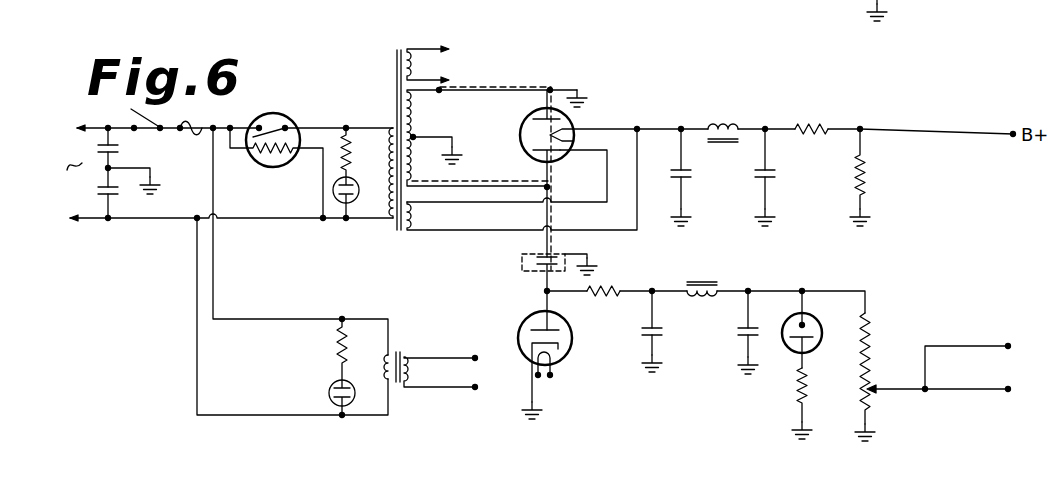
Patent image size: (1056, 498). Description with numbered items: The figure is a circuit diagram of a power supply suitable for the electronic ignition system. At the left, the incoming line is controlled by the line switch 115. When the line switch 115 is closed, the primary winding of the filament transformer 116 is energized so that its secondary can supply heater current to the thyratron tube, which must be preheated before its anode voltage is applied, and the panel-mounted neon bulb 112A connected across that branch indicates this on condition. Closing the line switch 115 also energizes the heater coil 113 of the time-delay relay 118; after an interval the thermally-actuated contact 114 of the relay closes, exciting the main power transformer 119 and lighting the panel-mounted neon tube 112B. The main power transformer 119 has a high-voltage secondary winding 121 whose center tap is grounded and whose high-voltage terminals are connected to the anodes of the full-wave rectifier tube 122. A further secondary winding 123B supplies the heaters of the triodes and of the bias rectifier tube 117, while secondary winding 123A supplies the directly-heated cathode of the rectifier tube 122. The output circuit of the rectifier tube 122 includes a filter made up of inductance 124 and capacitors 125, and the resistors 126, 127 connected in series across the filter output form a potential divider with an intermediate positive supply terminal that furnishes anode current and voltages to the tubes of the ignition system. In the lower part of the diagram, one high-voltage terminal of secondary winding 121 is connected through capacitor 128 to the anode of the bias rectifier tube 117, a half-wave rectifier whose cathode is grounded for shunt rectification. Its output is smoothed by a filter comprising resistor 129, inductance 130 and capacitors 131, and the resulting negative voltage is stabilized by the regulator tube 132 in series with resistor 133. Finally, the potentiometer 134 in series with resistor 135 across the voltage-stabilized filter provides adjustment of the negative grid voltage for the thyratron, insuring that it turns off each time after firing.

The panel-mounted neon bulb 112A is at (328, 385).
The panel-mounted neon tube 112B is at (353, 202).
The heater coil 113 is at (275, 160).
The thermally-actuated contact 114 is at (267, 123).
The line switch 115 is at (146, 121).
The filament transformer 116 is at (402, 355).
The bias rectifier tube 117 is at (565, 355).
The time-delay relay 118 is at (292, 123).
The main power transformer 119 is at (398, 233).
The high-voltage secondary winding 121 is at (418, 112).
The full-wave rectifier tube 122 is at (520, 132).
The secondary winding 123A is at (413, 208).
The secondary winding 123B is at (430, 45).
The inductance 124 is at (722, 124).
The capacitors 125 is at (685, 177).
The resistor 126 is at (808, 128).
The resistor 127 is at (858, 177).
The capacitor 128 is at (523, 272).
The resistor 129 is at (602, 295).
The inductance 130 is at (700, 297).
The capacitors 131 is at (737, 335).
The regulator tube 132 is at (817, 347).
The resistor 133 is at (797, 392).
The potentiometer 134 is at (872, 395).
The resistor 135 is at (868, 333).